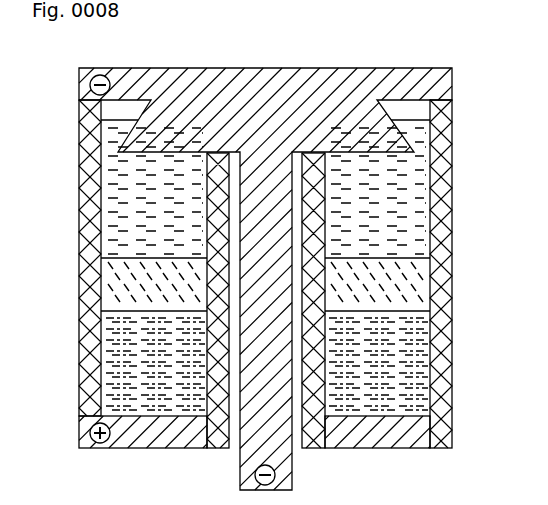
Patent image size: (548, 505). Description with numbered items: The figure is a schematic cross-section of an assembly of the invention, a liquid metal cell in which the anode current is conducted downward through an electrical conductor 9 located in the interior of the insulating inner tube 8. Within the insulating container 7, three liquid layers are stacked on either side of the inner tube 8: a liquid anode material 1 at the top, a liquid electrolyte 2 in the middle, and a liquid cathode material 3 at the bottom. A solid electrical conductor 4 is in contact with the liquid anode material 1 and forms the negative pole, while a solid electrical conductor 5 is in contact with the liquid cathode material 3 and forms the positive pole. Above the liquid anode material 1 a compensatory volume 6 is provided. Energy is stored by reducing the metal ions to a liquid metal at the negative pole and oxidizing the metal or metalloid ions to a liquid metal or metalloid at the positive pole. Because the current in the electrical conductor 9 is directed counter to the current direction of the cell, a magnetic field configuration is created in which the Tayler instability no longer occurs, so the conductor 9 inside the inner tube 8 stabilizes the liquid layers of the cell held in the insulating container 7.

The liquid anode material 1 is at (153, 197).
The liquid electrolyte 2 is at (155, 283).
The liquid cathode material 3 is at (155, 358).
The solid electrical conductor in contact with the anode material 4 is at (190, 90).
The solid electrical conductor in contact with the cathode material 5 is at (192, 432).
The compensatory volume 6 is at (409, 108).
The insulating container 7 is at (442, 200).
The insulating inner tube 8 is at (313, 273).
The electrical conductor 9 is at (267, 453).